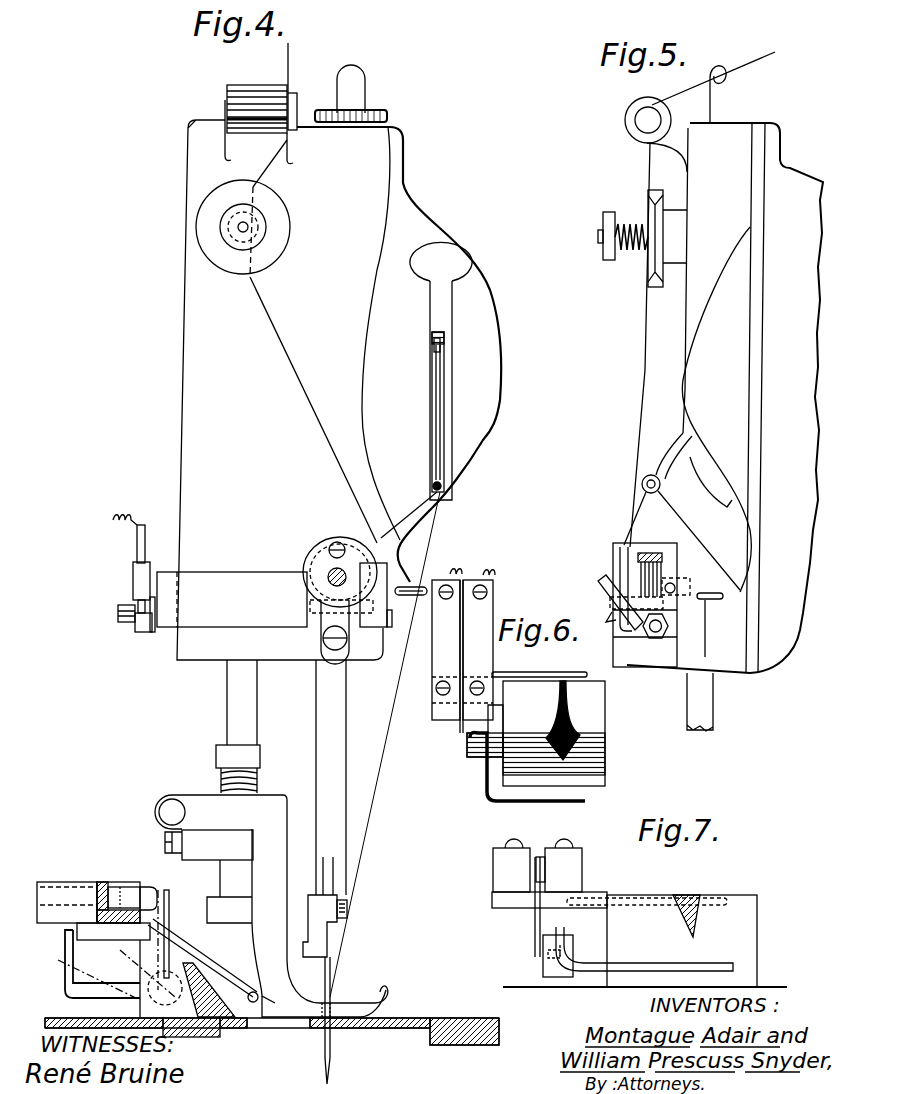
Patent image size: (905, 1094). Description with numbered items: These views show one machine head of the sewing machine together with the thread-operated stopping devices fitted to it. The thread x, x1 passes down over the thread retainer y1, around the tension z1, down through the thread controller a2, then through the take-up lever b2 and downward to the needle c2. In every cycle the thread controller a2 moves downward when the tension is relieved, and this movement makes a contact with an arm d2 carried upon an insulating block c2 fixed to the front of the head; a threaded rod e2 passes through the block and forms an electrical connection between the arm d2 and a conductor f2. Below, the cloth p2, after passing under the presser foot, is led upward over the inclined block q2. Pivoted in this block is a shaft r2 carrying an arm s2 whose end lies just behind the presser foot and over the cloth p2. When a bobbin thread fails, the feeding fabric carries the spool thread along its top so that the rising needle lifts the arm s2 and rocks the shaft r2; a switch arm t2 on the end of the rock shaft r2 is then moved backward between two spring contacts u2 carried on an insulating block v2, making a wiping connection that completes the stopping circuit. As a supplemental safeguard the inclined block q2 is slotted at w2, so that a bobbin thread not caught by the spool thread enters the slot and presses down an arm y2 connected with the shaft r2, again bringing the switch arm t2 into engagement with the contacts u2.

In FIG. 4, the thread retainer y1 is at (298, 105).
In FIG. 5, the thread retainer y1 is at (640, 120).
In FIG. 4, the thread x is at (270, 160).
In FIG. 5, the thread x is at (645, 168).
In FIG. 4, the tension z1 is at (267, 228).
In FIG. 5, the tension z1 is at (627, 242).
In FIG. 4, the take-up lever b2 is at (437, 443).
In FIG. 5, the take-up lever b2 is at (668, 443).
In FIG. 4, the thread controller a2 is at (377, 547).
In FIG. 5, the thread controller a2 is at (650, 597).
In FIG. 4, the needle / insulating block c2 is at (213, 582).
In FIG. 4, the arm d2 is at (392, 580).
In FIG. 5, the arm d2 is at (607, 580).
In FIG. 4, the threaded rod e2 is at (118, 617).
In FIG. 4, the conductor f2 is at (140, 543).
In FIG. 4, the thread x1 is at (365, 830).
In FIG. 4, the cloth p2 is at (412, 1017).
In FIG. 4, the inclined block q2 is at (221, 1030).
In FIG. 6, the inclined block q2 is at (605, 755).
In FIG. 7, the inclined block q2 is at (757, 918).
In FIG. 4, the shaft r2 is at (187, 1020).
In FIG. 7, the shaft r2 is at (543, 967).
In FIG. 4, the arm s2 is at (253, 990).
In FIG. 6, the arm s2 is at (527, 779).
In FIG. 7, the arm s2 is at (612, 966).
In FIG. 4, the switch arm t2 is at (125, 943).
In FIG. 6, the switch arm t2 is at (465, 745).
In FIG. 7, the switch arm t2 is at (535, 927).
In FIG. 4, the contacts u2 is at (112, 893).
In FIG. 6, the contacts u2 is at (458, 740).
In FIG. 7, the contacts u2 is at (543, 865).
In FIG. 4, the insulating block v2 is at (55, 892).
In FIG. 6, the insulating block v2 is at (440, 720).
In FIG. 7, the insulating block v2 is at (493, 862).
In FIG. 4, the slot w2 is at (206, 971).
In FIG. 6, the slot w2 is at (563, 728).
In FIG. 7, the slot w2 is at (695, 900).
In FIG. 4, the arm y2 is at (80, 980).
In FIG. 6, the arm y2 is at (565, 680).
In FIG. 7, the arm y2 is at (619, 900).